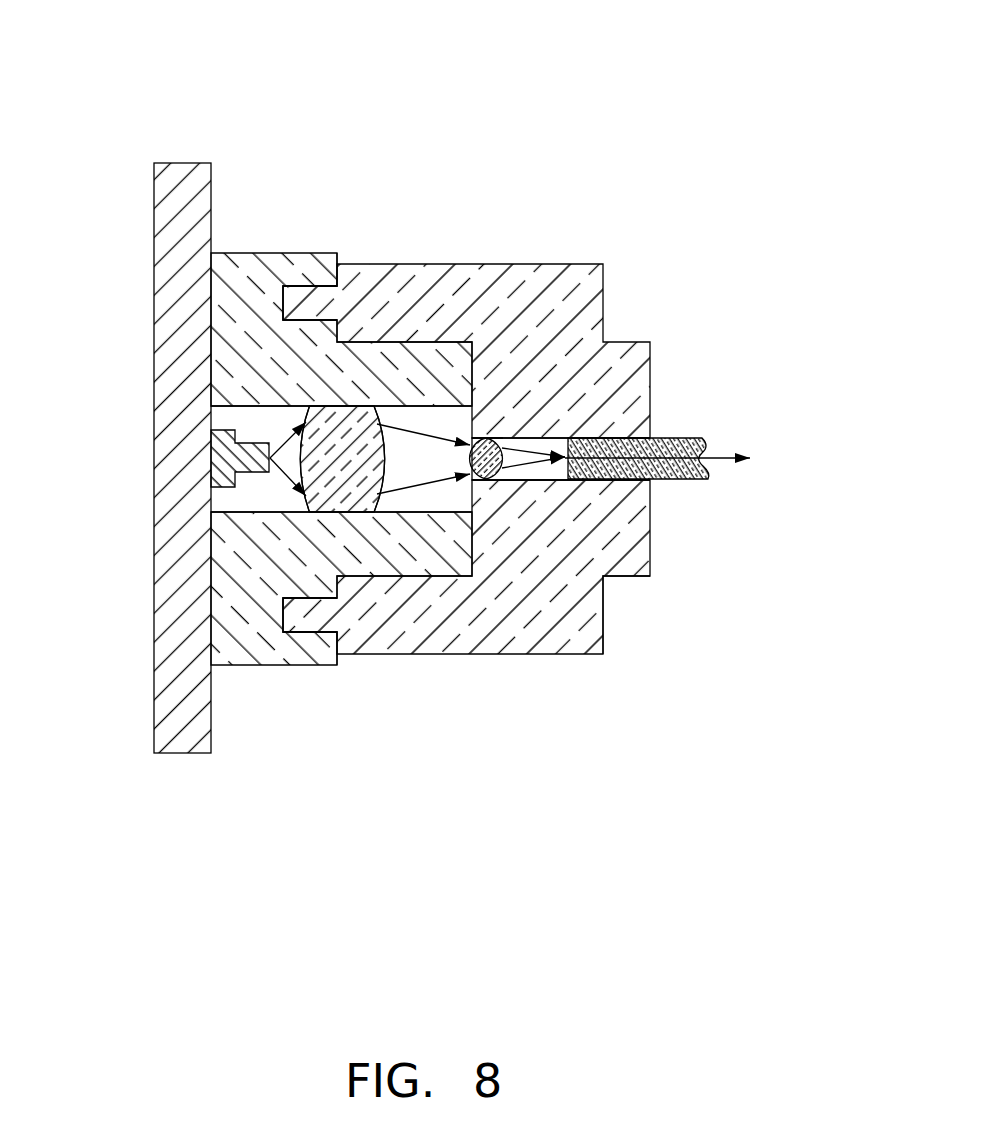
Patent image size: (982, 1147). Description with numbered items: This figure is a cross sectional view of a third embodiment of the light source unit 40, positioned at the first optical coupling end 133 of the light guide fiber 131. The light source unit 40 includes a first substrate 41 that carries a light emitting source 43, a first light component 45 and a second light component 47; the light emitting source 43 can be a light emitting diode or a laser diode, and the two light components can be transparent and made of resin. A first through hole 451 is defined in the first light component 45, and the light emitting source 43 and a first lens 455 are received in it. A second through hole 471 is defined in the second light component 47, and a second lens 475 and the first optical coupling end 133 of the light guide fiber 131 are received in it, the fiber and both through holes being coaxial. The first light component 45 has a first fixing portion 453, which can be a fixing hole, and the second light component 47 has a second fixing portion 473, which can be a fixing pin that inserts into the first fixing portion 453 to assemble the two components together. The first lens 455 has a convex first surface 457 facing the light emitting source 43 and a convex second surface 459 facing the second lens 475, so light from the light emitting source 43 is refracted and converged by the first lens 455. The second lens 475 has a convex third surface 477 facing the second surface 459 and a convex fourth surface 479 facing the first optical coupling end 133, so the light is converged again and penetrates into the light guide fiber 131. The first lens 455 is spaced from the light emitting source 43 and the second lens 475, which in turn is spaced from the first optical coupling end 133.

The light source unit 40 is at (423, 55).
The first substrate 41 is at (185, 300).
The light emitting source 43 is at (232, 458).
The first light component 45 is at (268, 272).
The first through hole 451 is at (222, 418).
The first fixing portion 453 is at (323, 285).
The first lens 455 is at (340, 485).
The first surface 457 is at (303, 500).
The second surface 459 is at (380, 470).
The second light component 47 is at (555, 293).
The second through hole 471 is at (543, 443).
The second fixing portion 473 is at (313, 302).
The second lens 475 is at (500, 472).
The third surface 477 is at (466, 461).
The fourth surface 479 is at (582, 582).
The light guide fiber 131 is at (680, 437).
The first optical coupling end 133 is at (557, 480).